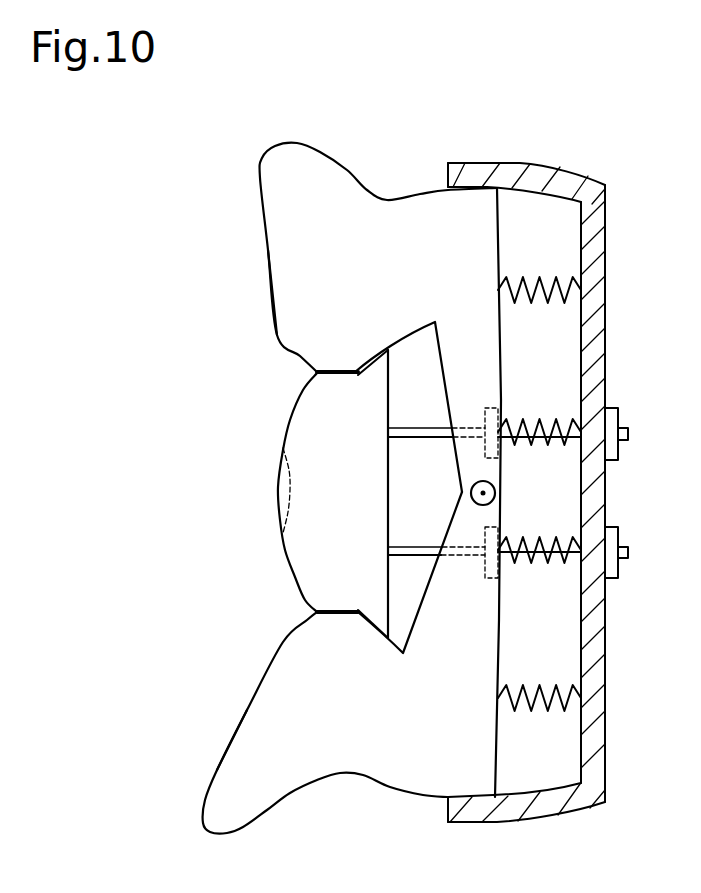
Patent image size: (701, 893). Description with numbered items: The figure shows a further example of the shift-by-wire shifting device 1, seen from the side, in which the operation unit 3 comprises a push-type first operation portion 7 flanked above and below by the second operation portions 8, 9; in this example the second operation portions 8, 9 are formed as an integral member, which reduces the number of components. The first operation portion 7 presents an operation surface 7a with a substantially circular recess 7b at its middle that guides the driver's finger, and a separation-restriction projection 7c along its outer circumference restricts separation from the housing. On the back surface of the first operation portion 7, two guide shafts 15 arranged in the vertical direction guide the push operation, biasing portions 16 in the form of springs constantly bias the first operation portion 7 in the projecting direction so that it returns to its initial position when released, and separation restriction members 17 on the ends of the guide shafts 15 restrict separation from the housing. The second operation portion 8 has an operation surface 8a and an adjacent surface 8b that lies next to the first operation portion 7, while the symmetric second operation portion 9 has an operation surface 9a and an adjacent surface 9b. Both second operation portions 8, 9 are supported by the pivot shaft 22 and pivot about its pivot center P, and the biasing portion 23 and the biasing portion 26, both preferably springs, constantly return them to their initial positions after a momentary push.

The shifting device 1 is at (226, 106).
The operation unit 3 is at (327, 157).
The first operation portion 7 is at (310, 475).
The operation surface 7a is at (288, 432).
The recess 7b is at (283, 490).
The separation-restriction projection 7c is at (378, 367).
The second operation portion 8 is at (347, 317).
The operation surface 8a is at (269, 268).
The adjacent surface 8b is at (299, 354).
The second operation portion 9 is at (328, 662).
The operation surface 9a is at (249, 709).
The adjacent surface 9b is at (305, 622).
The guide shaft 15 is at (418, 426).
The biasing portion 16 is at (541, 421).
The separation restriction member 17 is at (619, 412).
The pivot shaft 22 is at (495, 493).
The biasing portion 23 is at (541, 277).
The biasing portion 26 is at (541, 710).
The pivot center P is at (471, 493).